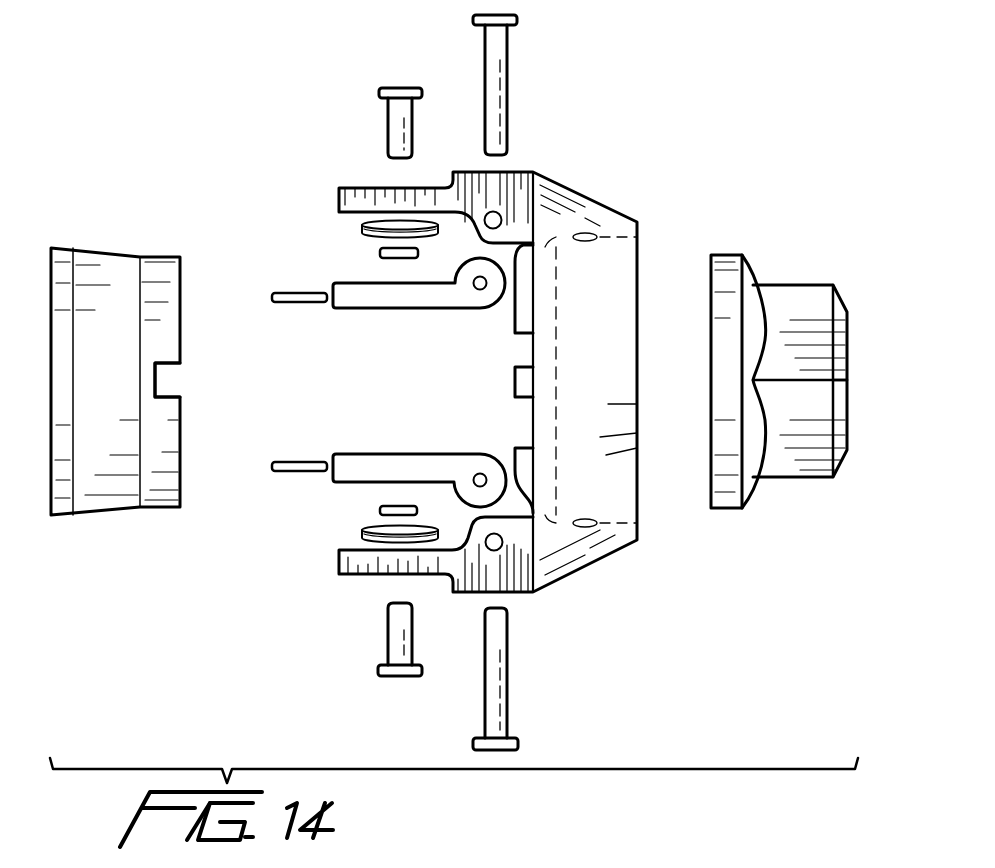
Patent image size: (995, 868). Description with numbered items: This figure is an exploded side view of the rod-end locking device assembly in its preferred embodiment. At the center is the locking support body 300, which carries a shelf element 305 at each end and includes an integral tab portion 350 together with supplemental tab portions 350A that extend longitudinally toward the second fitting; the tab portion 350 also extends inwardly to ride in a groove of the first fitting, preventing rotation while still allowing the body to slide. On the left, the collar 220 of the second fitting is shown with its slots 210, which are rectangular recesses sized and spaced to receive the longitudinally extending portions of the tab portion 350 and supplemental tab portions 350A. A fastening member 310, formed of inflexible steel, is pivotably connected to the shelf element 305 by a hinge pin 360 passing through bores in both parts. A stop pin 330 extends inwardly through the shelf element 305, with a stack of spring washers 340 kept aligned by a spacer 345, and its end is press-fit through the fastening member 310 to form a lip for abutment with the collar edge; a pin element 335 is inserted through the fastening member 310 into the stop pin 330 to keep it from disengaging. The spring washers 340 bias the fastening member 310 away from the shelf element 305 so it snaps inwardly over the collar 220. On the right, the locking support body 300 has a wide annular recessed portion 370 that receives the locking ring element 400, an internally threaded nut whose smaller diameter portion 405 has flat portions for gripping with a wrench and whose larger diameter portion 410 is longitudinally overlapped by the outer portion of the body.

The slots 210 is at (160, 377).
The collar 220 is at (105, 283).
The locking support body 300 is at (573, 202).
The shelf element 305 is at (362, 187).
The fastening member 310 is at (350, 300).
The stop pin 330 is at (387, 117).
The pin element 335 is at (283, 297).
The spring washers 340 is at (363, 228).
The spacer 345 is at (383, 252).
The tab portion 350 is at (520, 320).
The supplemental tab portions 350A is at (512, 383).
The hinge pin 360 is at (500, 48).
The recessed portion 370 is at (613, 260).
The locking ring element 400 is at (845, 312).
The smaller diameter portion 405 is at (810, 465).
The larger diameter portion 410 is at (725, 497).